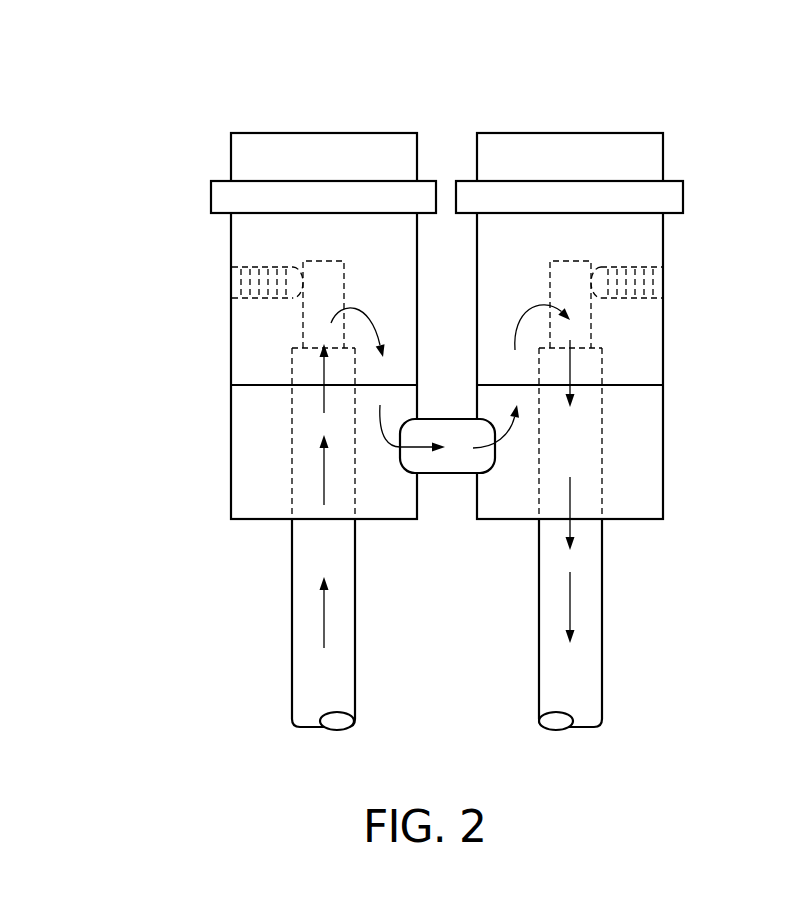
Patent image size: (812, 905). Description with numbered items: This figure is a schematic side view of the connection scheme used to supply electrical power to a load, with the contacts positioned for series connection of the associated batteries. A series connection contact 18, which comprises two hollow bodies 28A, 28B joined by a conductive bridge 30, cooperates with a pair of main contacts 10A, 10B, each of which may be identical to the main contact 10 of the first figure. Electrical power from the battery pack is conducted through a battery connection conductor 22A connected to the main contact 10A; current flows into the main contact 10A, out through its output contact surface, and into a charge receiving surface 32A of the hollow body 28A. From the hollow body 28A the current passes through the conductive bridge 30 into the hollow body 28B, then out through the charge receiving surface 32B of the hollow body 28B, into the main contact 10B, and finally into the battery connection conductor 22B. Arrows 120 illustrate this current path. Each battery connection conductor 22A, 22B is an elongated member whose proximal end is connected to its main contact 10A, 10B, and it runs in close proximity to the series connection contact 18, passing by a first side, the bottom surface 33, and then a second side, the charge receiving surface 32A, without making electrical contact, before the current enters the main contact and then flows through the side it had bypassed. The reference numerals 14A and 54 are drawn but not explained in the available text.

The main contact 10A is at (328, 74).
The main contact 10B is at (573, 76).
The main contact 10 is at (803, 221).
The drive 14A is at (811, 127).
The shaft 54 is at (811, 67).
The charge receiving surface 32A is at (212, 375).
The charge receiving surface 32B is at (712, 365).
The hollow body 28A is at (255, 496).
The hollow body 28B is at (652, 455).
The conductive bridge 30 is at (442, 475).
The arrows 120 is at (386, 420).
The battery connection conductor 22A is at (292, 608).
The battery connection conductor 22B is at (602, 620).
The bottom surface 33 is at (378, 539).
The series connection contact 18 is at (433, 613).